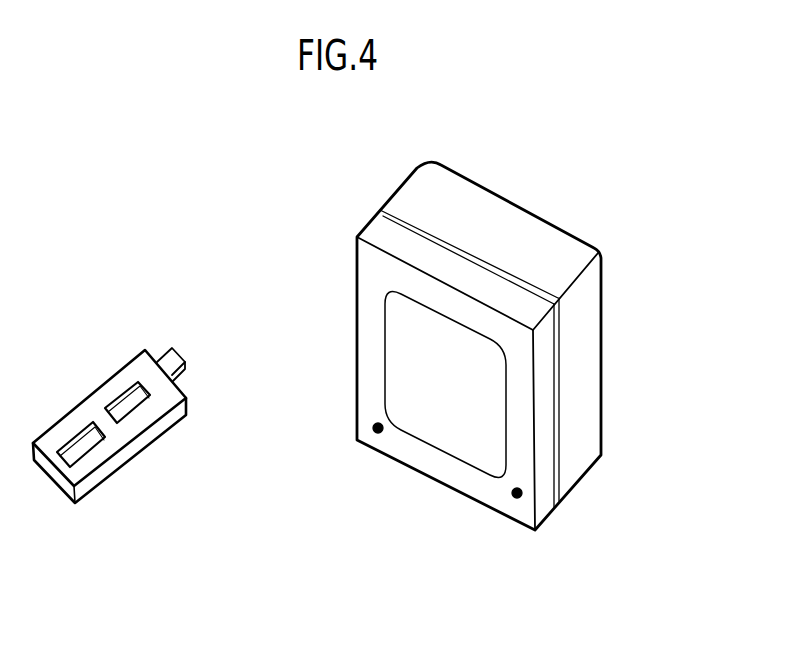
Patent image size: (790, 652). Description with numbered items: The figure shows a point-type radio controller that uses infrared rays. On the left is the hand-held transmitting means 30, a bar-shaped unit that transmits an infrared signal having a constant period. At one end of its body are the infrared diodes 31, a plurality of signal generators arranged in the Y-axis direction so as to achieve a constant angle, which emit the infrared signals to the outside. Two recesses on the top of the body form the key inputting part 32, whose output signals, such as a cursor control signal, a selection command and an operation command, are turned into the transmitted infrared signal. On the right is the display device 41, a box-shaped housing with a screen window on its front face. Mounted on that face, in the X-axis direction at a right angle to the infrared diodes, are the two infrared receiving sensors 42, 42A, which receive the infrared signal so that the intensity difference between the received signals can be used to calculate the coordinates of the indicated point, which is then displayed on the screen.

The transmitting means 30 is at (66, 411).
The infrared diode 31 is at (172, 355).
The key inputting part 32 is at (80, 440).
The display device 41 is at (602, 346).
The infrared receiving sensor 42 is at (379, 434).
The infrared receiving sensor 42A is at (517, 499).